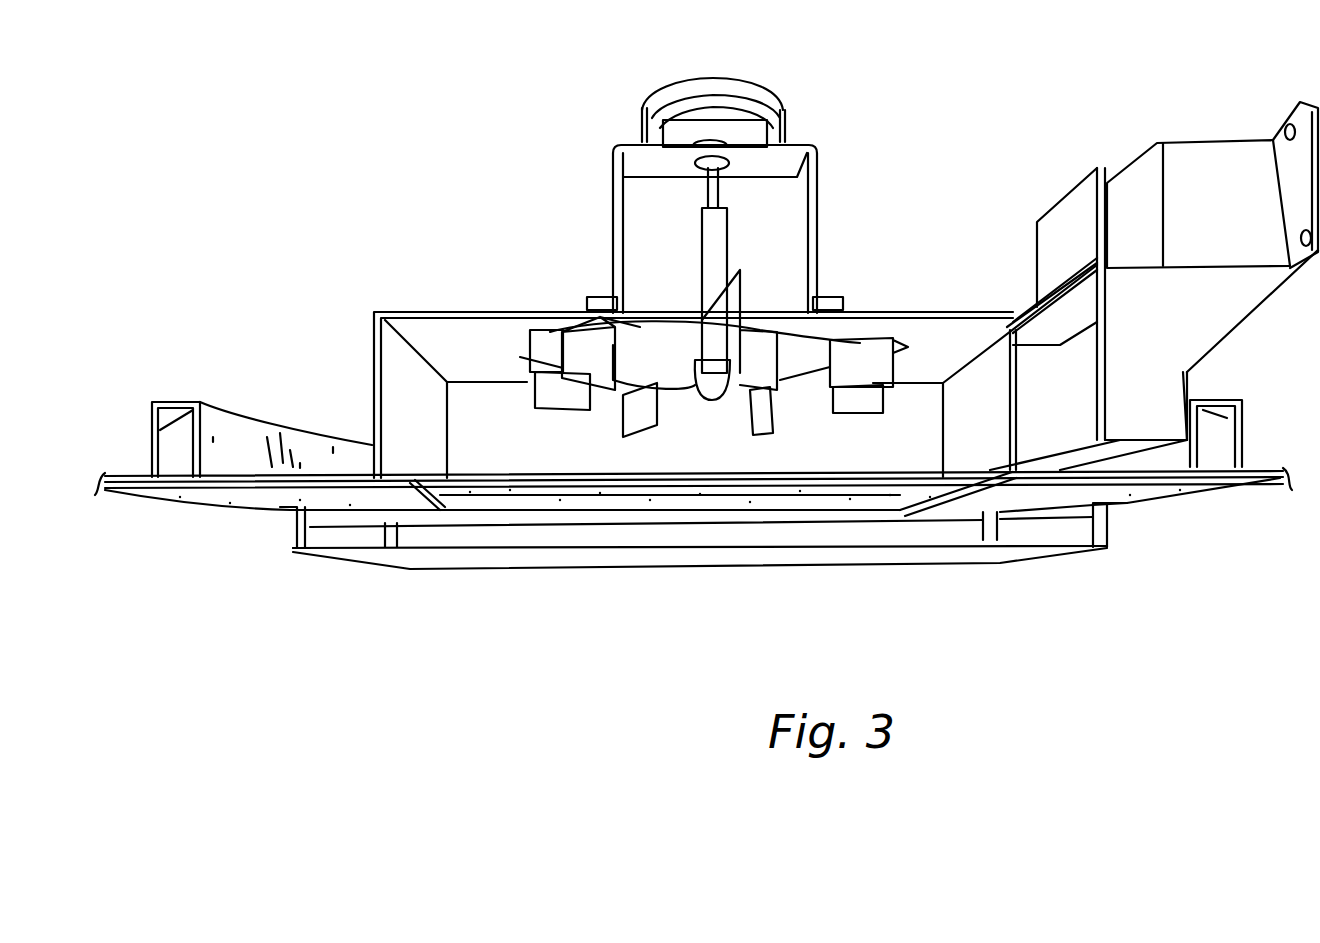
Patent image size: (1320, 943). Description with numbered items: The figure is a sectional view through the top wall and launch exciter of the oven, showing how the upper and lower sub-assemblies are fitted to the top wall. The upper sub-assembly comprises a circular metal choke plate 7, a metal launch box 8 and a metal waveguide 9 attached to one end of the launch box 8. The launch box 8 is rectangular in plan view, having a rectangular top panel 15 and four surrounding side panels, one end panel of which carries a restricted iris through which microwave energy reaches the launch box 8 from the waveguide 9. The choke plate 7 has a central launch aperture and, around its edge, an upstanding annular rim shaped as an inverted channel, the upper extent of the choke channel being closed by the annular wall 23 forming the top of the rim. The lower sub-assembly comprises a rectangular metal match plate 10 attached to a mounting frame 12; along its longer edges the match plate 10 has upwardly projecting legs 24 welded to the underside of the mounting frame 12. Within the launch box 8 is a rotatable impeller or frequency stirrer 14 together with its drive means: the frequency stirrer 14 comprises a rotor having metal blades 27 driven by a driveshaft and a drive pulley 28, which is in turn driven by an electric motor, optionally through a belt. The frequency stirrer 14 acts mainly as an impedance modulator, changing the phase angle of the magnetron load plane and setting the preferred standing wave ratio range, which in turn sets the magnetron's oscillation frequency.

The choke plate 7 is at (140, 453).
The launch box 8 is at (447, 330).
The waveguide 9 is at (1193, 163).
The match plate 10 is at (580, 562).
The mounting frame 12 is at (190, 490).
The frequency stirrer 14 is at (862, 357).
The top panel 15 is at (945, 316).
The annular wall 23 is at (160, 427).
The legs 24 is at (295, 528).
The metal blades 27 is at (722, 316).
The drive pulley 28 is at (750, 90).